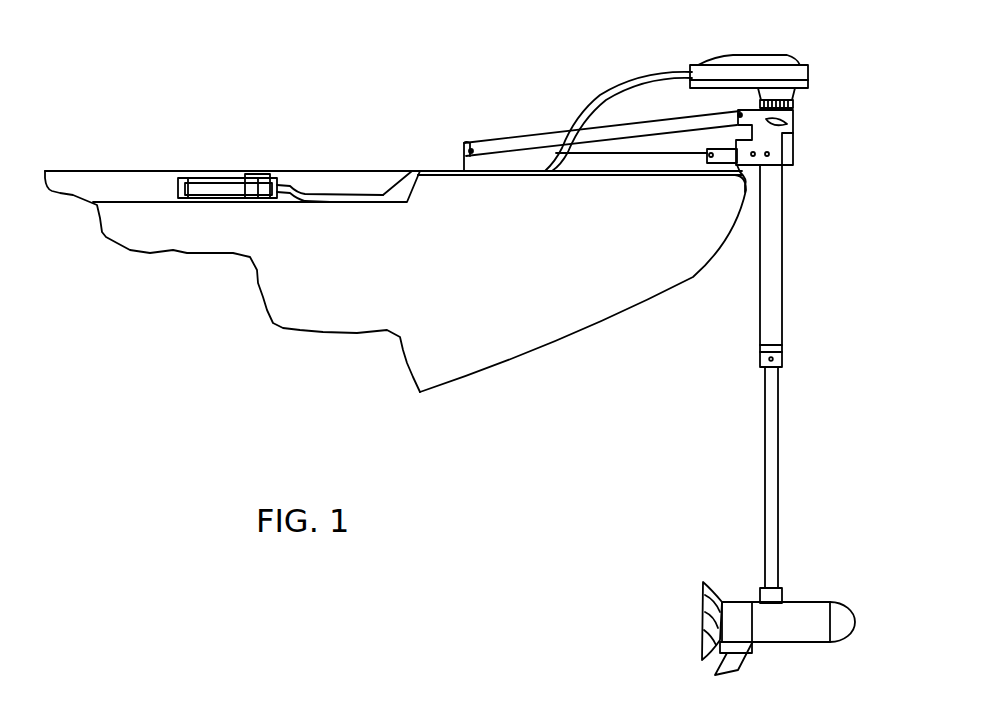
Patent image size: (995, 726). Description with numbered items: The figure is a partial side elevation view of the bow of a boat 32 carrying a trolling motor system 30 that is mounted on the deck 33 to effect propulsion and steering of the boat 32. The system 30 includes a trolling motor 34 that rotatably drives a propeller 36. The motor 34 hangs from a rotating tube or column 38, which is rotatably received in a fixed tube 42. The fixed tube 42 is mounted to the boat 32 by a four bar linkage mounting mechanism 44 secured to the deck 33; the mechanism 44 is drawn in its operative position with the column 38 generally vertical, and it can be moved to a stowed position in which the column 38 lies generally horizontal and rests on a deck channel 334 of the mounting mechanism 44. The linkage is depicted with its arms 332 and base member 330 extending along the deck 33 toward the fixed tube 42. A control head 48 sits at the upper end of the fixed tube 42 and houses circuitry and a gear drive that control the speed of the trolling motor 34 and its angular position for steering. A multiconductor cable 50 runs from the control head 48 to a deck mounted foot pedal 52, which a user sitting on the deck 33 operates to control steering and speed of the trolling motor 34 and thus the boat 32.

The trolling motor system 30 is at (790, 43).
The boat 32 is at (557, 330).
The deck 33 is at (358, 171).
The trolling motor 34 is at (807, 596).
The propeller 36 is at (712, 590).
The rotating tube 38 is at (772, 488).
The fixed tube 42 is at (777, 285).
The four bar linkage mounting mechanism 44 is at (750, 172).
The control head 48 is at (793, 67).
The multiconductor cable 50 is at (628, 78).
The foot pedal 52 is at (210, 178).
The mounting base 330 is at (718, 157).
The upper link arm 332 is at (640, 96).
The deck channel 334 is at (638, 157).